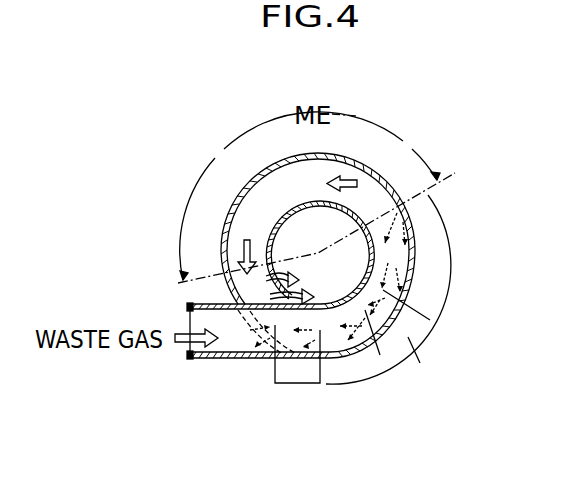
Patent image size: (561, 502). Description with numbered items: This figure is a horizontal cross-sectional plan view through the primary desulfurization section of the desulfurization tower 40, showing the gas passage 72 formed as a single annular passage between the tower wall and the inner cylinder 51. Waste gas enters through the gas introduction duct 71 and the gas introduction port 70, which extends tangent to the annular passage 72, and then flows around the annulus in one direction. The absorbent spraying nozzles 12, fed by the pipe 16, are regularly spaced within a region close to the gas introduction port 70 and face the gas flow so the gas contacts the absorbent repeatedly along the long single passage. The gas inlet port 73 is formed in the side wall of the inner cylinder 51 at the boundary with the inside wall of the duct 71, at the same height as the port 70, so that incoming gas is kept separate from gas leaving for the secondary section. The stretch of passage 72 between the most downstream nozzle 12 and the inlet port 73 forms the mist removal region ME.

The desulfurization tower 40 is at (362, 159).
The inner cylinder 51 is at (357, 215).
The gas passage 72 is at (258, 189).
The absorbent spraying nozzles 12 is at (447, 255).
The pipe 16 is at (412, 372).
The gas introduction port 70 is at (333, 337).
The gas introduction duct 71 is at (218, 358).
The gas inlet port 73 is at (263, 293).